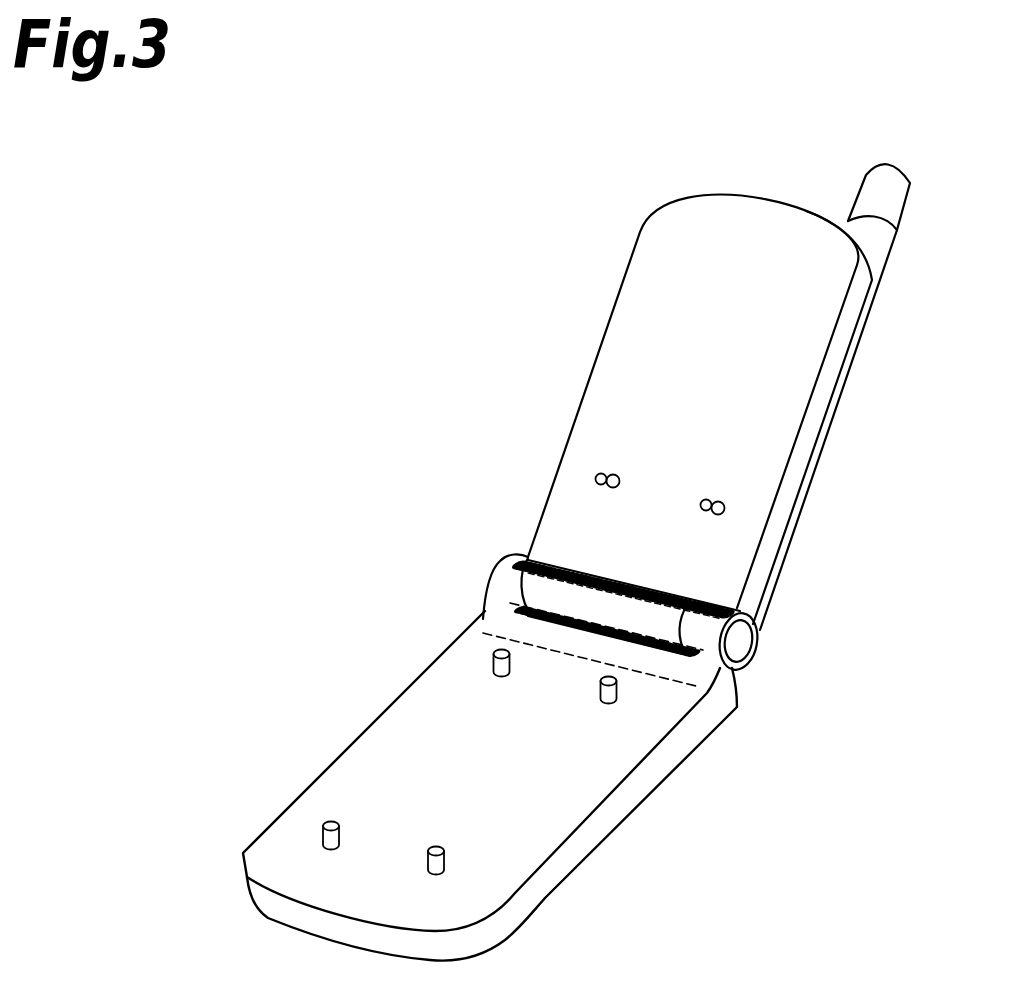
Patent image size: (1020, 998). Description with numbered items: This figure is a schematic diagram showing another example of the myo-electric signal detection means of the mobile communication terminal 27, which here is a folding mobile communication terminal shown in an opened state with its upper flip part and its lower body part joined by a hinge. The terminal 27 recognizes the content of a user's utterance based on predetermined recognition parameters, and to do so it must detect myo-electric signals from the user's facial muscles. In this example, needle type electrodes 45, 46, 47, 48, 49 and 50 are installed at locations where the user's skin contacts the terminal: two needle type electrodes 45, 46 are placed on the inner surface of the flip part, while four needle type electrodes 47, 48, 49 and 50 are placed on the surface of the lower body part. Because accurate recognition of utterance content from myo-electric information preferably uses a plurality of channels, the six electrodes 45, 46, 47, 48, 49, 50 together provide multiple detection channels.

The mobile communication terminal 27 is at (732, 194).
The needle type electrode 45 is at (595, 478).
The needle type electrode 46 is at (698, 509).
The needle type electrode 47 is at (500, 649).
The needle type electrode 48 is at (618, 675).
The needle type electrode 49 is at (327, 822).
The needle type electrode 50 is at (445, 847).